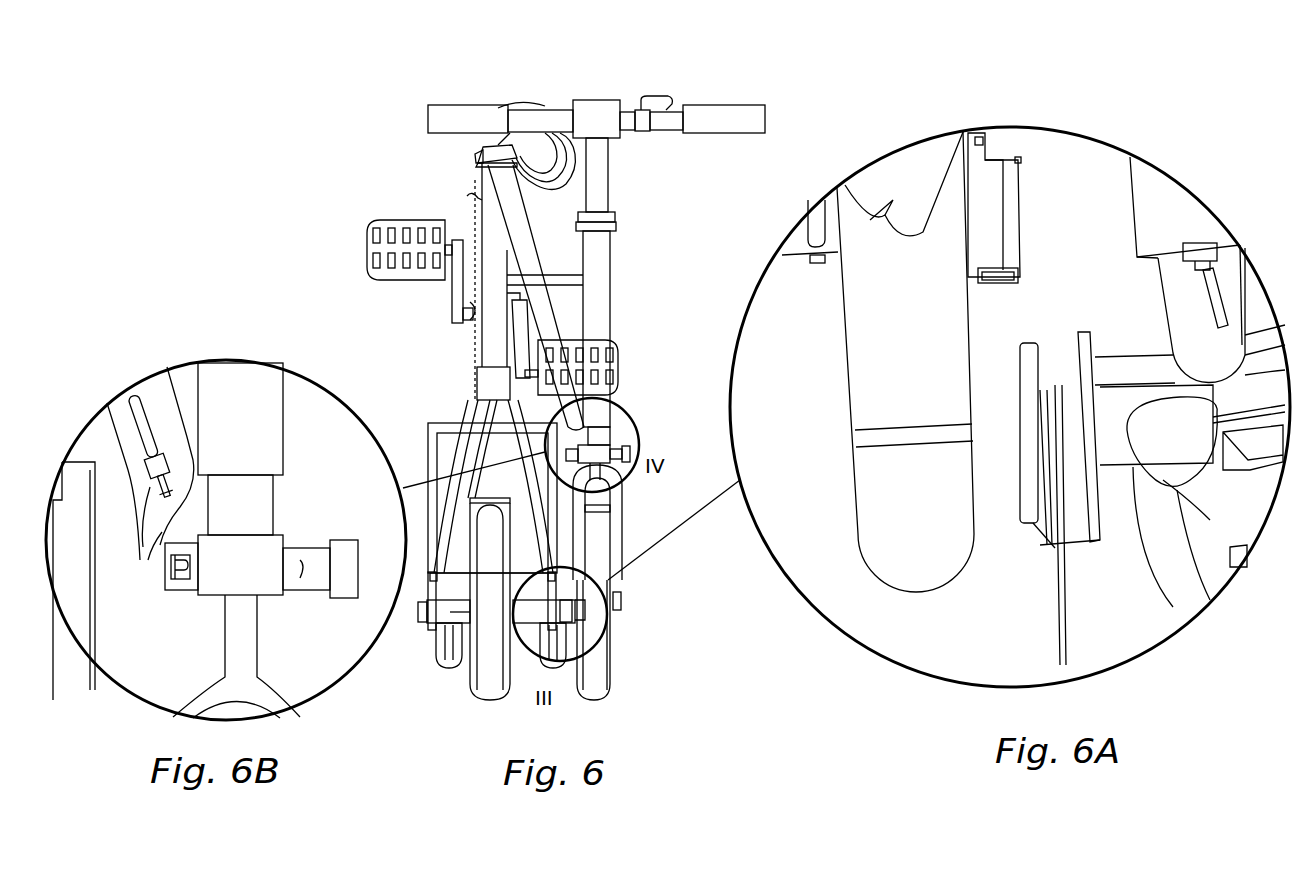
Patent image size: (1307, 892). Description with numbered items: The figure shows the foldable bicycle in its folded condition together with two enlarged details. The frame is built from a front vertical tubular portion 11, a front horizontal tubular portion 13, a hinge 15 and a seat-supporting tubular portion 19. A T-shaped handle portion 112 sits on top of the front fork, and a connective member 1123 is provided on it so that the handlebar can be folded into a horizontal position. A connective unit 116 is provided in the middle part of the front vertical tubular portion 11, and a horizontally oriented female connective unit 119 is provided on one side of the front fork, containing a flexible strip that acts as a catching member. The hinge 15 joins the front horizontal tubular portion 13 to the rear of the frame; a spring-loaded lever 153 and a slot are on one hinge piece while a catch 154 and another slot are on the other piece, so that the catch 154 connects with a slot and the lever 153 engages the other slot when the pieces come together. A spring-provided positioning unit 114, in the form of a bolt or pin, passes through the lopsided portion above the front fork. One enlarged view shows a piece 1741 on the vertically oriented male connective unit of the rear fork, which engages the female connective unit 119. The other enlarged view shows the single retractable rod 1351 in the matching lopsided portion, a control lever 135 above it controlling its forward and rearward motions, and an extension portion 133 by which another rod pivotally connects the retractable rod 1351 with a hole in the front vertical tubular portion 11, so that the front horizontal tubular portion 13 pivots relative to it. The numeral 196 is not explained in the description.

In FIG. 6, the front vertical tubular portion 11 is at (600, 181).
In FIG. 6B, the front vertical tubular portion 11 is at (245, 377).
In FIG. 6, the front horizontal tubular portion 13 is at (556, 302).
In FIG. 6B, the front horizontal tubular portion 13 is at (115, 402).
In FIG. 6A, the front horizontal tubular portion 13 is at (918, 162).
In FIG. 6A, the hinge 15 is at (1163, 215).
In FIG. 6, the seat-supporting tubular portion 19 is at (472, 228).
In FIG. 6, the T-shaped handle portion 112 is at (556, 116).
In FIG. 6, the positioning unit 114 is at (425, 640).
In FIG. 6B, the positioning unit 114 is at (307, 583).
In FIG. 6, the connective unit 116 is at (583, 283).
In FIG. 6A, the female connective unit 119 is at (1013, 215).
In FIG. 6B, the extension portion 133 is at (137, 510).
In FIG. 6B, the control lever 135 is at (150, 440).
In FIG. 6A, the lever 153 is at (1203, 248).
In FIG. 6, the catch 154 is at (476, 158).
In FIG. 6, the axle nut 196 is at (437, 670).
In FIG. 6, the connective member 1123 is at (660, 99).
In FIG. 6B, the retractable rod 1351 is at (146, 550).
In FIG. 6A, the piece 1741 is at (1063, 365).